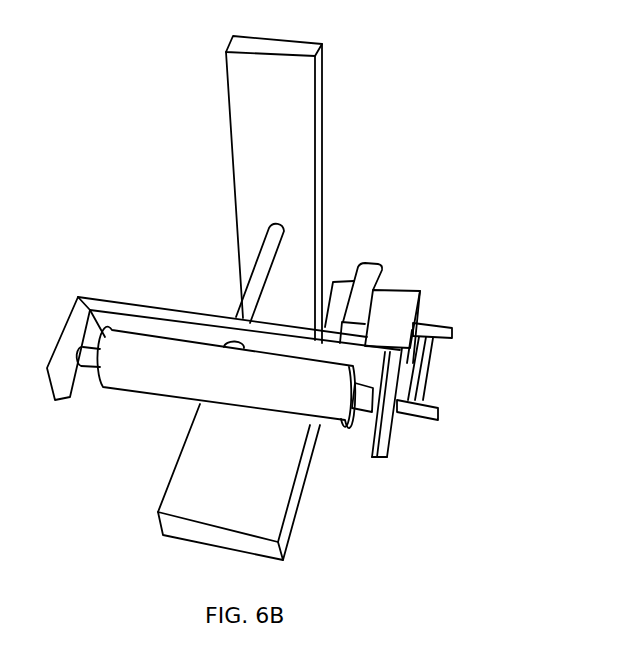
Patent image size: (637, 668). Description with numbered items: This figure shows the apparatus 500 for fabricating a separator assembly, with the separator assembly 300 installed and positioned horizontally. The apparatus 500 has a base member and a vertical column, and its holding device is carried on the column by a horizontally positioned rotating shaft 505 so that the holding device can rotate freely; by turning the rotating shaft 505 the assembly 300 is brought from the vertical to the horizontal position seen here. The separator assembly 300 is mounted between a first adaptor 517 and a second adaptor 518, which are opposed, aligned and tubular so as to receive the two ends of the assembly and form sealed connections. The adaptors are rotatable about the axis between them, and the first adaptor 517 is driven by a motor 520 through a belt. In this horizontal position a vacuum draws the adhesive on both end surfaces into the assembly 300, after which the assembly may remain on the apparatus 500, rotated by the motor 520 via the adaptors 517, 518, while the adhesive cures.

The apparatus 500 is at (325, 200).
The rotating shaft 505 is at (260, 272).
The motor 520 is at (393, 312).
The separator assembly 300 is at (177, 378).
The second adaptor 518 is at (93, 377).
The first adaptor 517 is at (363, 400).